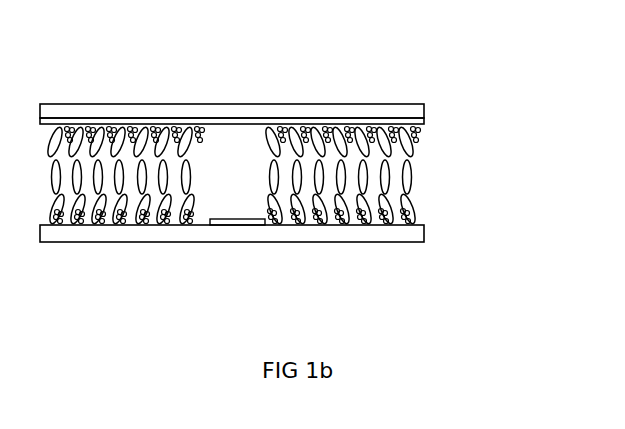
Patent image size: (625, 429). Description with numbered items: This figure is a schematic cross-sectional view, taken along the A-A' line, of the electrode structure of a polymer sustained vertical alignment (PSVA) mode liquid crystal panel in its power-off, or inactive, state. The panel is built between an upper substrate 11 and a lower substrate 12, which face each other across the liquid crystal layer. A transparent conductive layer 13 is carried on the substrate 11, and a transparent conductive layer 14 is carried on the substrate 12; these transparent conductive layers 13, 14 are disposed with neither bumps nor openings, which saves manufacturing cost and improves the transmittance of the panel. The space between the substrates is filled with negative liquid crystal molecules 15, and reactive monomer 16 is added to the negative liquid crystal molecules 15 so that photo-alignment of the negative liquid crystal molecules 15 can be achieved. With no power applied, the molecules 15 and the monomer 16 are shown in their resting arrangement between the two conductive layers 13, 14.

The substrate 11 is at (240, 110).
The substrate 12 is at (162, 237).
The transparent conductive layer 13 is at (383, 117).
The transparent conductive layer 14 is at (230, 225).
The negative liquid crystal molecules 15 is at (417, 207).
The reactive monomer 16 is at (420, 140).